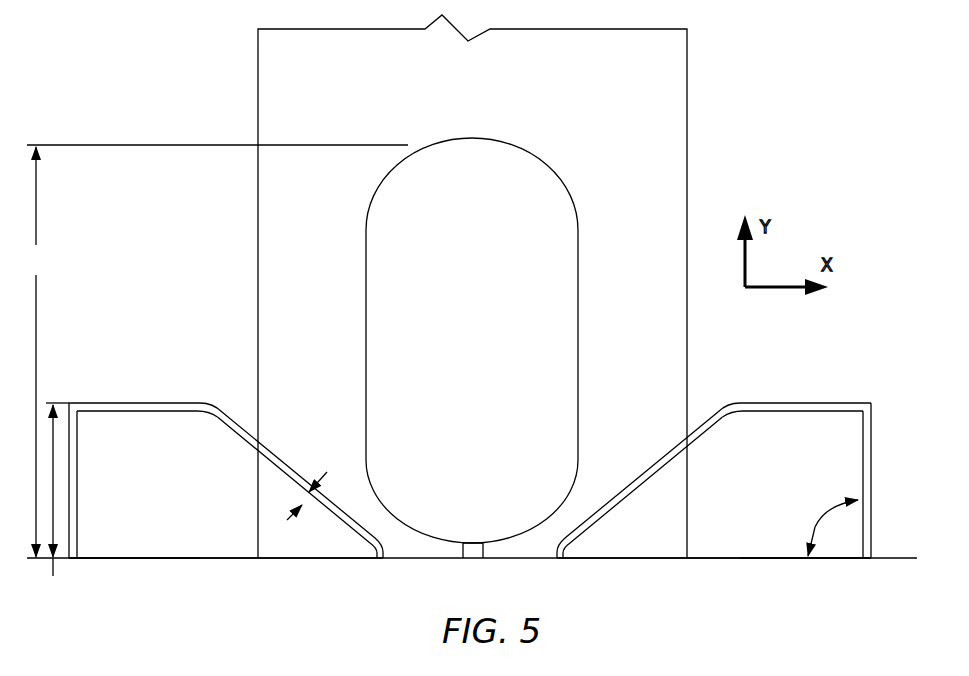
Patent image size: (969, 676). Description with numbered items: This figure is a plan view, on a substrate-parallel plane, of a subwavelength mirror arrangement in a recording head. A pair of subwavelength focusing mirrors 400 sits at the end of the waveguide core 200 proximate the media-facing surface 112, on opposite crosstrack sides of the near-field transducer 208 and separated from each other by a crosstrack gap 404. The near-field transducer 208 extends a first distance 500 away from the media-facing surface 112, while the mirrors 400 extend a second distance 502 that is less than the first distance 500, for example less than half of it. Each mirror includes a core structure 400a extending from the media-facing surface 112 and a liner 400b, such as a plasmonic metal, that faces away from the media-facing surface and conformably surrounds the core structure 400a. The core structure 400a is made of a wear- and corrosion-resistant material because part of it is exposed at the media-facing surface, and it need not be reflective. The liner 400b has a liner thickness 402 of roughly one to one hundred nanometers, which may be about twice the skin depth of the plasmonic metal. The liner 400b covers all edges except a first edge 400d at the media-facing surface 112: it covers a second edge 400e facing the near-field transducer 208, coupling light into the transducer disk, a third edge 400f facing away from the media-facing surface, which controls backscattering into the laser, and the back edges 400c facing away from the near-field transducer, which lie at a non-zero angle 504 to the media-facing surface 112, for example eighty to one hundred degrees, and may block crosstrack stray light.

The media-facing surface 112 is at (917, 558).
The waveguide core 200 is at (258, 117).
The near-field transducer 208 is at (304, 290).
The subwavelength focusing mirror 400 is at (498, 451).
The core structure 400a is at (249, 538).
The liner 400b is at (208, 404).
The back edge 400c is at (77, 450).
The first edge 400d is at (135, 560).
The second edge 400e is at (291, 482).
The third edge 400f is at (158, 412).
The liner thickness 402 is at (316, 484).
The crosstrack gap 404 is at (418, 568).
The first distance 500 is at (214, 351).
The second distance 502 is at (55, 499).
The non-zero angle 504 is at (815, 540).